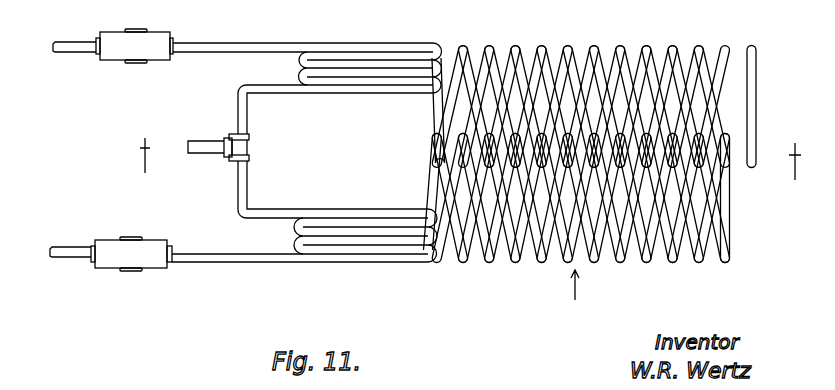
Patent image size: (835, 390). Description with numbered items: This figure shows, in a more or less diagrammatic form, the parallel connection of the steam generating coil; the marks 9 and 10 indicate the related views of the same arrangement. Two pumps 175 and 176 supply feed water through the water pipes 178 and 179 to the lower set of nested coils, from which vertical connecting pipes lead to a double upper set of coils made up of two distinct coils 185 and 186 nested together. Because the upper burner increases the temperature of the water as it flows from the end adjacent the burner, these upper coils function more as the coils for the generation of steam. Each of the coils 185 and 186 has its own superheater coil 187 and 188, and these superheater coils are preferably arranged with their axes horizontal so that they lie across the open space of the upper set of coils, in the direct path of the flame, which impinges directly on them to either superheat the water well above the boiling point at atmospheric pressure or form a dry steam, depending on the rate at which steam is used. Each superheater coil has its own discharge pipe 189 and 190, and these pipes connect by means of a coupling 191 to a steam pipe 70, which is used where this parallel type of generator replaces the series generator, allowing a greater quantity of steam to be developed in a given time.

The pump 175 is at (133, 48).
The pump 176 is at (115, 255).
The water pipe 178 is at (249, 47).
The water pipe 179 is at (268, 256).
The coil 185 is at (670, 47).
The coil 186 is at (652, 256).
The superheater coil 187 is at (382, 248).
The superheater coil 188 is at (368, 58).
The discharge pipe 189 is at (250, 90).
The discharge pipe 190 is at (265, 214).
The coupling 191 is at (234, 140).
The steam pipe 70 is at (209, 147).
The section line 10 is at (479, 159).
The view arrow 9 is at (569, 288).